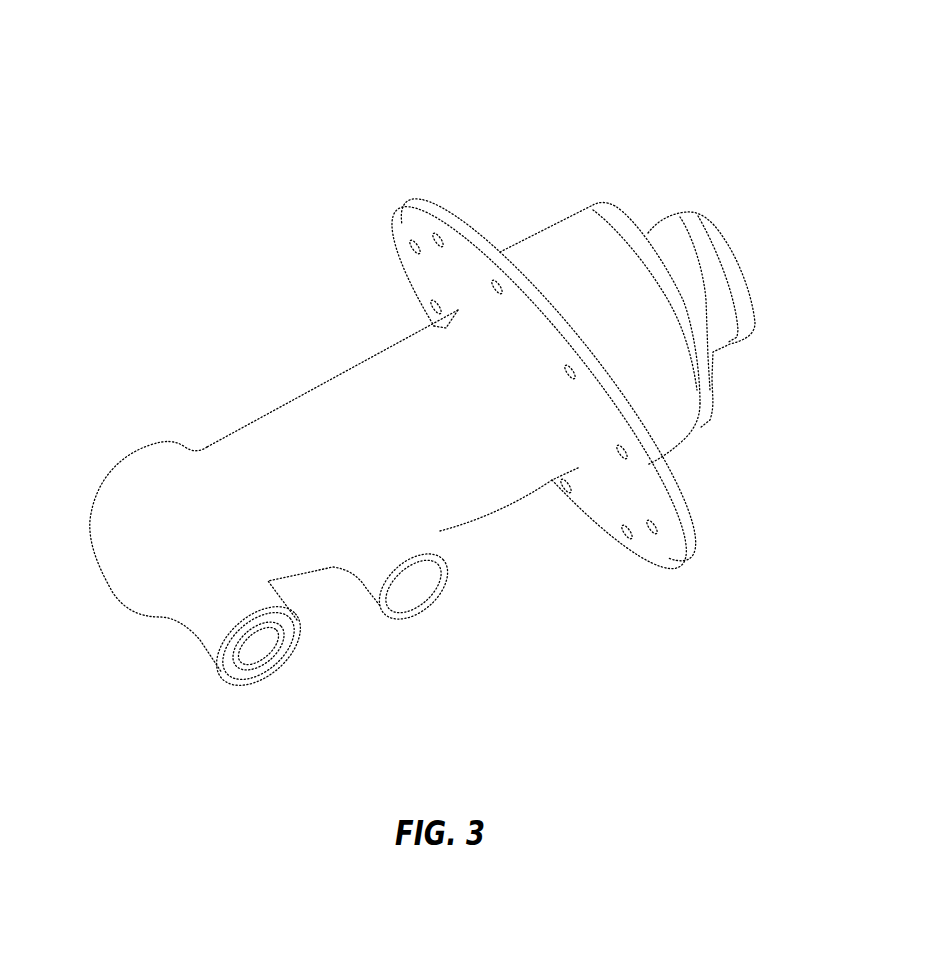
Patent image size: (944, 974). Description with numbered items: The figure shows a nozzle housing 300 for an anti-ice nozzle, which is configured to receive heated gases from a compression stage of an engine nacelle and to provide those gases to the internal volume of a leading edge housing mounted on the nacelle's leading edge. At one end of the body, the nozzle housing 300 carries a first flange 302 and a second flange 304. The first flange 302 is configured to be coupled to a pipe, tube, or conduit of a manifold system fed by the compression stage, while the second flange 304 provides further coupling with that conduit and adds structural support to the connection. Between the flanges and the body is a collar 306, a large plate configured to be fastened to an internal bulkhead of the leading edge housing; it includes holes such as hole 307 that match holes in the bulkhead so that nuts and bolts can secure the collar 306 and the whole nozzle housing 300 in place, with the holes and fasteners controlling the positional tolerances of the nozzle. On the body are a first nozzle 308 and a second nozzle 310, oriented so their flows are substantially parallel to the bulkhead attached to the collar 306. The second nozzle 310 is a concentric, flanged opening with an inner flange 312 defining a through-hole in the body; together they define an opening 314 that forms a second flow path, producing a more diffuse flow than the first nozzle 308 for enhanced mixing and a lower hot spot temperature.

The nozzle housing 300 is at (716, 28).
The first flange 302 is at (700, 213).
The second flange 304 is at (620, 200).
The collar 306 is at (647, 463).
The hole 307 is at (435, 237).
The first nozzle 308 is at (400, 612).
The second nozzle 310 is at (227, 672).
The inner flange 312 is at (256, 660).
The opening 314 is at (287, 632).